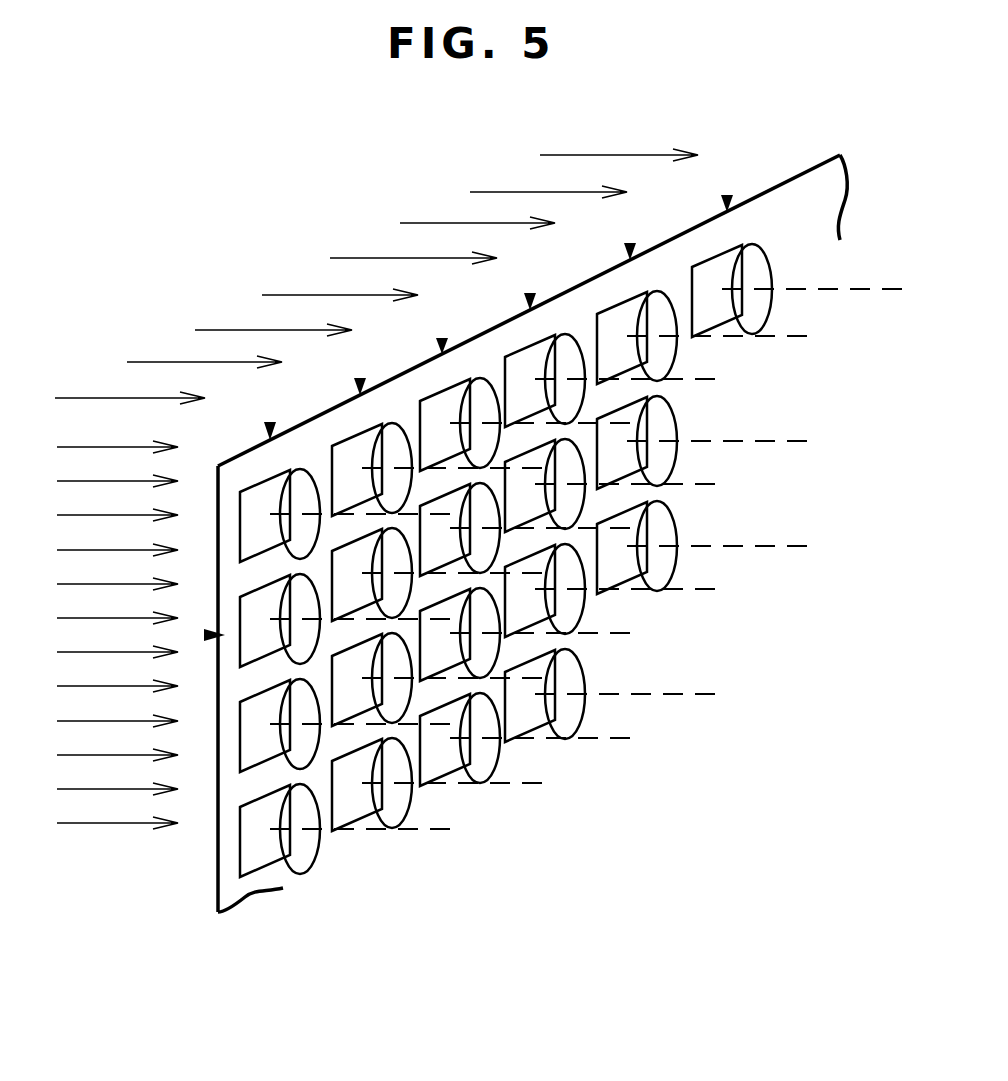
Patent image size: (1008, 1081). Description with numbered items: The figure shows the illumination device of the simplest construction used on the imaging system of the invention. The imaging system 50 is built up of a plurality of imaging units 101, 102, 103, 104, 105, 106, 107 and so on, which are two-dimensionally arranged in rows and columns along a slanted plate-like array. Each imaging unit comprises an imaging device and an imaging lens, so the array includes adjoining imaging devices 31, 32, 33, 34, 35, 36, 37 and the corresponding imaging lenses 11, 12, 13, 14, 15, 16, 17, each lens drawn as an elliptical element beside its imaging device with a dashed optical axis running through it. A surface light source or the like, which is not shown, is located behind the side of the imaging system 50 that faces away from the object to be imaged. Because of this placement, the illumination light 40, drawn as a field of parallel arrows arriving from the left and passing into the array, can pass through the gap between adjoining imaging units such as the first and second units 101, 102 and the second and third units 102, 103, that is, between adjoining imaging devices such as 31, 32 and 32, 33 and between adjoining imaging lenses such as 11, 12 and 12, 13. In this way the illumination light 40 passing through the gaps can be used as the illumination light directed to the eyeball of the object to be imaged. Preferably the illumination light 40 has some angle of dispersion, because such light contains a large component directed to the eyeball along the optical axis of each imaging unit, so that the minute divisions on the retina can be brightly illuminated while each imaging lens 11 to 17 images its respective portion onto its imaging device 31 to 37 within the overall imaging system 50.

The imaging lens 11 is at (299, 469).
The imaging lens 12 is at (391, 423).
The imaging lens 13 is at (479, 379).
The imaging lens 14 is at (569, 322).
The imaging lens 15 is at (659, 263).
The imaging lens 16 is at (760, 245).
The imaging lens 17 is at (290, 578).
The imaging device 31 is at (247, 489).
The imaging device 32 is at (340, 442).
The imaging device 33 is at (428, 397).
The imaging device 34 is at (513, 353).
The imaging device 35 is at (606, 308).
The imaging device 36 is at (702, 262).
The imaging device 37 is at (250, 597).
The imaging unit 101 is at (270, 426).
The imaging unit 102 is at (360, 382).
The imaging unit 103 is at (442, 342).
The imaging unit 104 is at (530, 296).
The imaging unit 105 is at (630, 246).
The imaging unit 106 is at (727, 197).
The imaging unit 107 is at (204, 635).
The illumination light 40 is at (117, 824).
The imaging system 50 is at (585, 868).